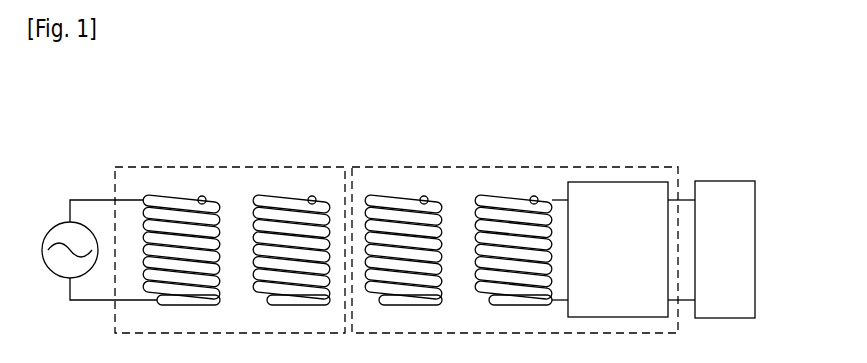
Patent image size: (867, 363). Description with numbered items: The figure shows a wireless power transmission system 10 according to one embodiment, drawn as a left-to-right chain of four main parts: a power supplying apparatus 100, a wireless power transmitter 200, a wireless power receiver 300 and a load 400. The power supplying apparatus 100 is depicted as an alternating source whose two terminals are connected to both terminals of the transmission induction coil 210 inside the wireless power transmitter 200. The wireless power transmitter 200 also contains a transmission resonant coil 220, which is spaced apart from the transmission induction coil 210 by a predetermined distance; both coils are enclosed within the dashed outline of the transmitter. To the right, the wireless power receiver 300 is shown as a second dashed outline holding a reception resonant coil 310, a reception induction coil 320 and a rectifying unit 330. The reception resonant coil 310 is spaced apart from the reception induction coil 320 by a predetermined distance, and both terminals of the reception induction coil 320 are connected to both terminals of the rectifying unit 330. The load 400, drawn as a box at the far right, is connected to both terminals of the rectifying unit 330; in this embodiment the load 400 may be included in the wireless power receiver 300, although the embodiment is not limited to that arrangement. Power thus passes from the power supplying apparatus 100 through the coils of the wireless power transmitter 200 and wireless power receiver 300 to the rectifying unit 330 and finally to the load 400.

The wireless power transmission system 10 is at (750, 83).
The power supplying apparatus 100 is at (50, 223).
The wireless power transmitter 200 is at (134, 166).
The transmission induction coil 210 is at (191, 208).
The transmission resonant coil 220 is at (292, 205).
The wireless power receiver 300 is at (446, 166).
The reception resonant coil 310 is at (397, 205).
The reception induction coil 320 is at (520, 205).
The rectifying unit 330 is at (618, 182).
The load 400 is at (725, 181).